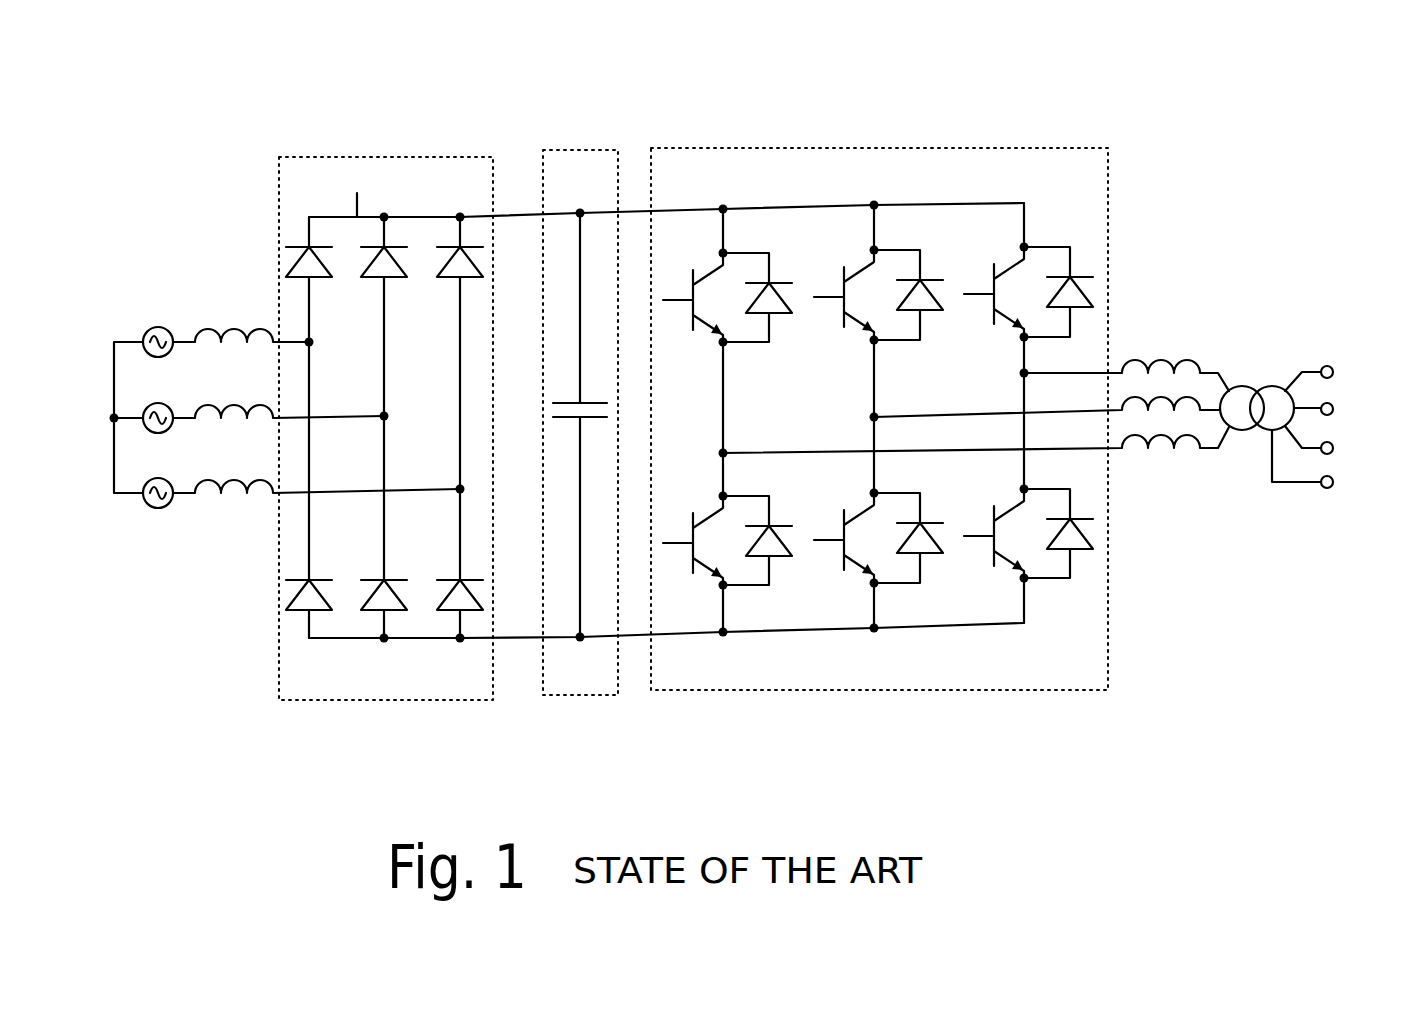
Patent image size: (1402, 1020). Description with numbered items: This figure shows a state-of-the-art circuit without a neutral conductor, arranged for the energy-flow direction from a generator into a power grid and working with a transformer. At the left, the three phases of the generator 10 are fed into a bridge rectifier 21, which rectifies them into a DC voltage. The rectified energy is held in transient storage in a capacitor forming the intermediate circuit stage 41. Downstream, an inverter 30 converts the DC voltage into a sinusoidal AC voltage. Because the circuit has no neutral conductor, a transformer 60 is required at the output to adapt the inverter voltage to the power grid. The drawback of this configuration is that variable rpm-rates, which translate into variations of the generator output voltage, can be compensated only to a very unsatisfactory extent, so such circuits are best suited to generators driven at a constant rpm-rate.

The generator 10 is at (165, 295).
The bridge rectifier 21 is at (379, 145).
The intermediate circuit stage 41 is at (576, 138).
The inverter 30 is at (683, 138).
The transformer 60 is at (1263, 320).